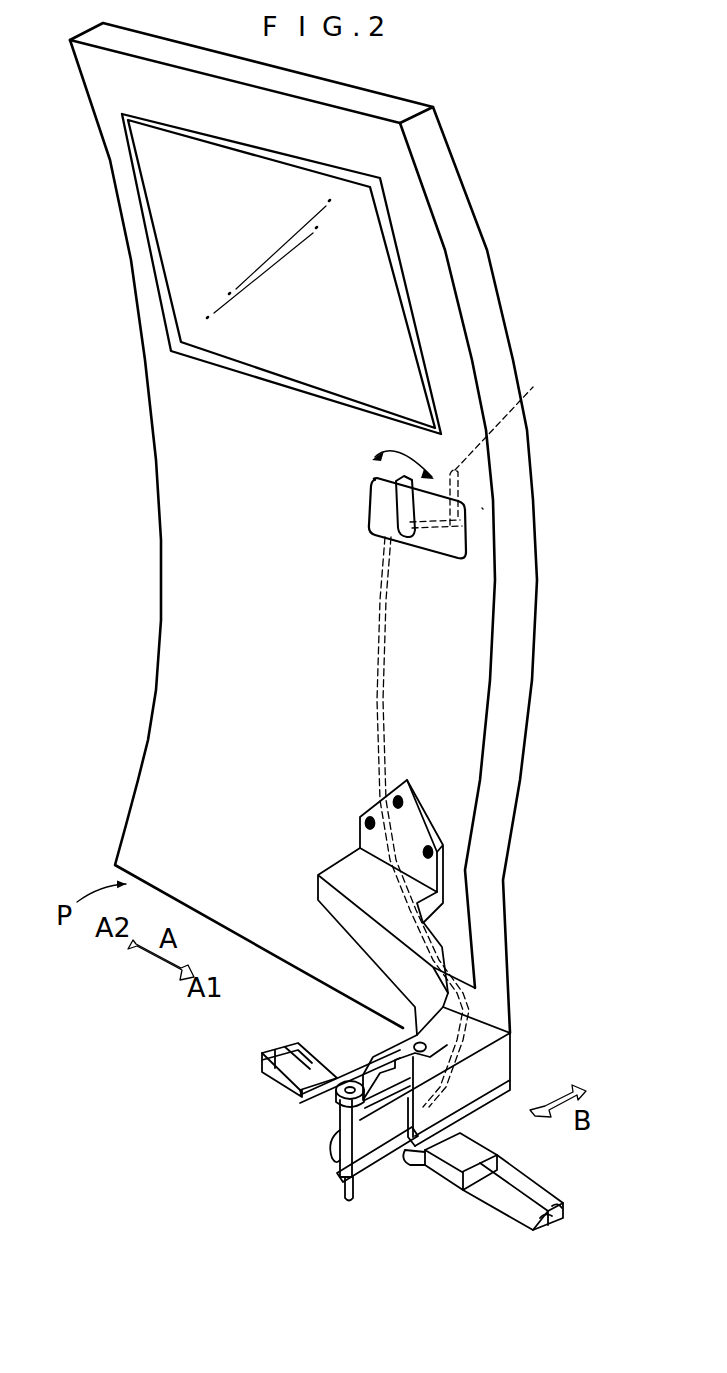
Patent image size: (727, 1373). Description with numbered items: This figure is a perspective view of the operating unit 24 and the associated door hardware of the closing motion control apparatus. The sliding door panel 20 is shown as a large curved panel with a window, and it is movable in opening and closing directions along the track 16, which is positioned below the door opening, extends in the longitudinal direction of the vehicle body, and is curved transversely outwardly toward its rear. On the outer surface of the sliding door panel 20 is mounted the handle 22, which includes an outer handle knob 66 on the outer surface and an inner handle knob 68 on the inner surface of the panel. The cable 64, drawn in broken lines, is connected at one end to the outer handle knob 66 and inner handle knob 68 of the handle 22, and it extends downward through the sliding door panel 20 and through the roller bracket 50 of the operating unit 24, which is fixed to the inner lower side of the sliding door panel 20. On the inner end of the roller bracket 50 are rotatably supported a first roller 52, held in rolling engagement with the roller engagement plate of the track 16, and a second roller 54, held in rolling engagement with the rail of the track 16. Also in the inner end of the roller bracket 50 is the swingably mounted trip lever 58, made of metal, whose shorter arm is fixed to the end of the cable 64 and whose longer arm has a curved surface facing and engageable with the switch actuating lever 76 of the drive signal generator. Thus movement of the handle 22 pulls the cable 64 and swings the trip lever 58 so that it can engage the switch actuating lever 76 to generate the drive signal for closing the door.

The sliding door panel 20 is at (530, 445).
The handle 22 is at (482, 508).
The inner handle knob 68 is at (400, 520).
The outer handle knob 66 is at (490, 447).
The cable 64 is at (377, 648).
The roller bracket 50 is at (495, 1012).
The second roller 54 is at (348, 1081).
The first roller 52 is at (330, 1147).
The switch actuating lever 76 is at (345, 1192).
The trip lever 58 is at (370, 1166).
The operating unit 24 is at (402, 1160).
The track 16 is at (547, 1187).